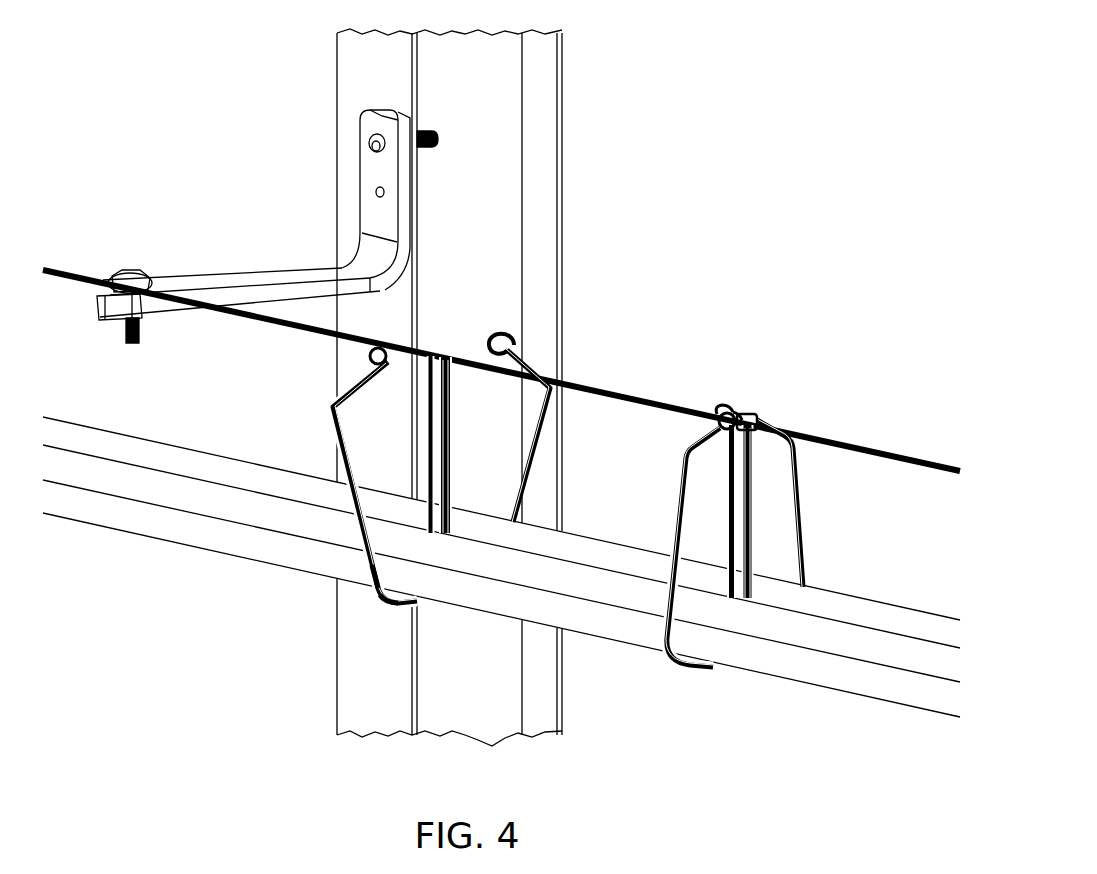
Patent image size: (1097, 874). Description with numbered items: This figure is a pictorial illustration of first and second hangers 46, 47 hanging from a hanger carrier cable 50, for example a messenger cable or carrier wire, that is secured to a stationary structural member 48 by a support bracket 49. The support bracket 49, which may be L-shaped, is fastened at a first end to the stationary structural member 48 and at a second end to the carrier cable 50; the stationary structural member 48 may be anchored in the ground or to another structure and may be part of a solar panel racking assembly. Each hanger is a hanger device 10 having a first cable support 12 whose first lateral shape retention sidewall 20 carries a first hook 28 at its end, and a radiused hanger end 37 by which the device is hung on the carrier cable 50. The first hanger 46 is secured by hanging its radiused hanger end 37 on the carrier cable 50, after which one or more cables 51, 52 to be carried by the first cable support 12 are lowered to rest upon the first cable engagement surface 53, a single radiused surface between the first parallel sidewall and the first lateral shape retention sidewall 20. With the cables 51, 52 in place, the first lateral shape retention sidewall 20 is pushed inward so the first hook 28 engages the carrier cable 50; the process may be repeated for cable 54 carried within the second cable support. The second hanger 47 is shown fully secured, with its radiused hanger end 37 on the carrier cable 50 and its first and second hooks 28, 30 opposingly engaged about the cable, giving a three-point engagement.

The hanger device 10 is at (432, 438).
The first cable support 12 is at (383, 606).
The first lateral shape retention sidewall 20 is at (326, 441).
The first hook 28 is at (368, 356).
The second hook 30 is at (508, 338).
The radiused hanger end 37 is at (493, 338).
The first hanger 46 is at (339, 519).
The second hanger 47 is at (812, 497).
The stationary structural member 48 is at (548, 230).
The support bracket 49 is at (258, 283).
The hanger carrier cable 50 is at (62, 268).
The cable 51 is at (133, 522).
The cable 52 is at (205, 500).
The first cable engagement surface 53 is at (398, 606).
The cable 54 is at (584, 537).